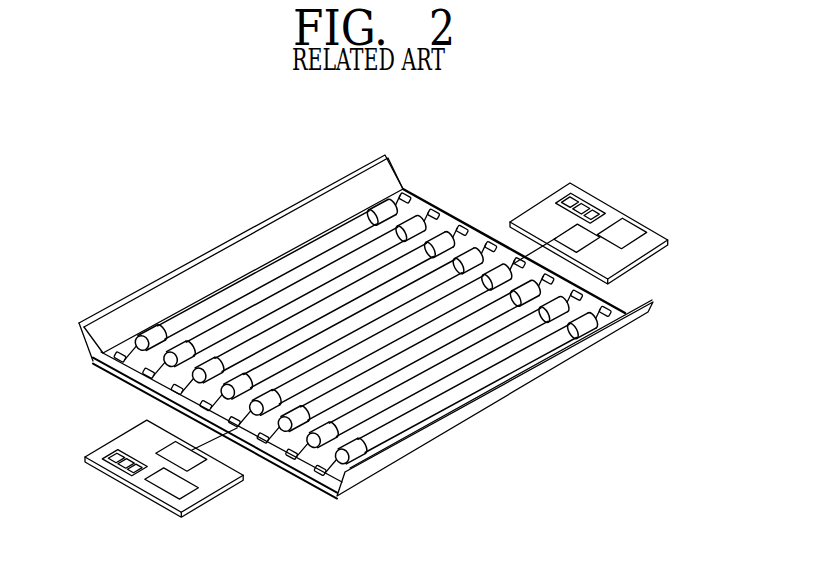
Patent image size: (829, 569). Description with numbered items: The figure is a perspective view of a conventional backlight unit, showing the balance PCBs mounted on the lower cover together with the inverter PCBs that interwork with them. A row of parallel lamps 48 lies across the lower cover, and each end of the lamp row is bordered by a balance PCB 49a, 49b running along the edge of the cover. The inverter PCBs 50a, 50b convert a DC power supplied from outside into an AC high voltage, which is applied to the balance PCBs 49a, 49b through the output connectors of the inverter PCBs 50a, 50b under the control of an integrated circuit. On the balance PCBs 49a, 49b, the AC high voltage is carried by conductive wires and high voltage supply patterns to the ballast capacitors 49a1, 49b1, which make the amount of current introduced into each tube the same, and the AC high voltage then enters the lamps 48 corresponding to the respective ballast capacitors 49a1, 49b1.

The lamps 48 is at (468, 388).
The balance PCB 49a is at (118, 377).
The balance PCB 49b is at (452, 221).
The ballast capacitors 49a1 is at (318, 476).
The ballast capacitors 49b1 is at (608, 313).
The inverter PCB 50a is at (140, 477).
The inverter PCB 50b is at (615, 212).